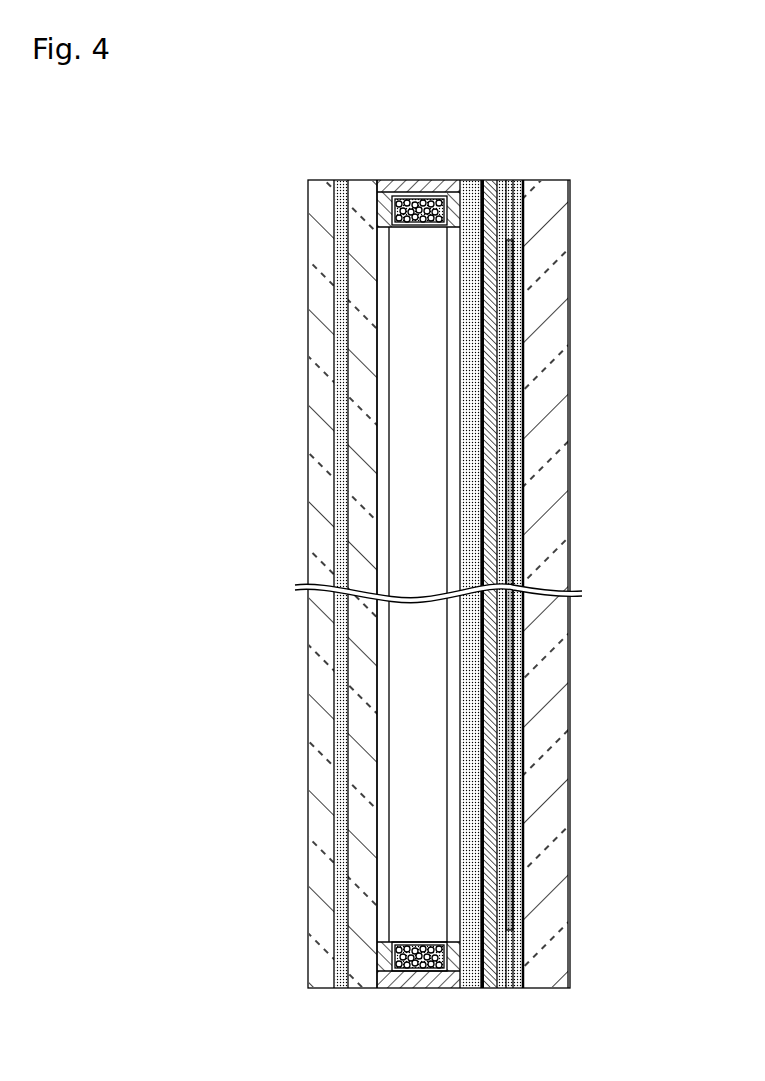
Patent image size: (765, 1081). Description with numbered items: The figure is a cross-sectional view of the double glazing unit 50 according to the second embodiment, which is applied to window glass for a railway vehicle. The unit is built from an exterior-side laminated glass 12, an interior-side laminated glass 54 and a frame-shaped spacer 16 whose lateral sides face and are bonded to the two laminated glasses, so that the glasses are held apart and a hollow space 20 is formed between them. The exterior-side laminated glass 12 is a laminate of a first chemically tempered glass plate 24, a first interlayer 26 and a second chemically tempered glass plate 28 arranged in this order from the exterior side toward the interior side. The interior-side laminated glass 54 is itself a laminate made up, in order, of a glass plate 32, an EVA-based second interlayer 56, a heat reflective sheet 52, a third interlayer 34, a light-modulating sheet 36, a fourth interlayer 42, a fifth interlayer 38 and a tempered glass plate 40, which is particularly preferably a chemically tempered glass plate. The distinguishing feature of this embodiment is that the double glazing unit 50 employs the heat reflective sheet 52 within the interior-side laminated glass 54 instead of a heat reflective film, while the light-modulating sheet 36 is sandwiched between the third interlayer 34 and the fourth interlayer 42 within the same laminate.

The exterior-side laminated glass 12 is at (375, 172).
The spacer 16 is at (402, 284).
The hollow space 20 is at (436, 546).
The chemically tempered glass plate 24 is at (310, 960).
The interlayer 26 is at (342, 988).
The chemically tempered glass plate 28 is at (370, 988).
The glass plate 32 is at (472, 988).
The interlayer 34 is at (507, 988).
The light-modulating sheet 36 is at (512, 886).
The interlayer 38 is at (523, 930).
The tempered glass plate 40 is at (568, 843).
The interlayer 42 is at (512, 963).
The double glazing unit 50 is at (622, 134).
The heat reflective sheet 52 is at (492, 989).
The interior-side laminated glass 54 is at (570, 172).
The interlayer 56 is at (483, 988).